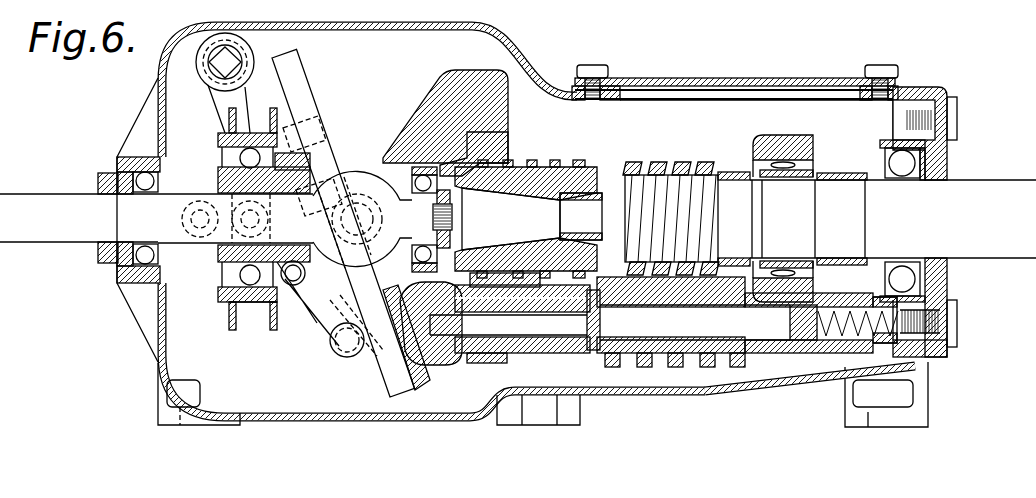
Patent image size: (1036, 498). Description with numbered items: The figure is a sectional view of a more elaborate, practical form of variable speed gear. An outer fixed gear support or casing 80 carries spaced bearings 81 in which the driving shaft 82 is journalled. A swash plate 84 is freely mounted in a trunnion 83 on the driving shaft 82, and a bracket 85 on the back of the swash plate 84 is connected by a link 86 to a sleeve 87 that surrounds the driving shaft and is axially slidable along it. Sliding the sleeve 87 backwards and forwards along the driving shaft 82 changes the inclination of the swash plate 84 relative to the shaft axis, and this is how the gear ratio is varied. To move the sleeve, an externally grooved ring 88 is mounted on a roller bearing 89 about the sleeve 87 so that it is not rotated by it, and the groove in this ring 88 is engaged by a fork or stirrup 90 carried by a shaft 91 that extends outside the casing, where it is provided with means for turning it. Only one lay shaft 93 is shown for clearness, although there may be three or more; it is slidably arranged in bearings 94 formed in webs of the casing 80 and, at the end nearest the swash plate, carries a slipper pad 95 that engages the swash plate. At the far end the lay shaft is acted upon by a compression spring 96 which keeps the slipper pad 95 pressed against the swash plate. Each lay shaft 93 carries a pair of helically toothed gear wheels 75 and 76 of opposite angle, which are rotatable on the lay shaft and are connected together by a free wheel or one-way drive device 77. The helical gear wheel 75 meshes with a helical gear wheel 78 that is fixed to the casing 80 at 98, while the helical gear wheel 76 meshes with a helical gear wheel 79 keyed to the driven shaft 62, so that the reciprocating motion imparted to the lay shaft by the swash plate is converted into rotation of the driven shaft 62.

The driven shaft 62 is at (606, 190).
The helical gear wheel 75 is at (570, 365).
The helical gear wheel 76 is at (745, 375).
The free wheel or one-way drive device 77 is at (648, 356).
The helical gear wheel 78 is at (556, 166).
The helical gear wheel 79 is at (655, 176).
The casing 80 is at (508, 52).
The bearings 81 is at (116, 266).
The driving shaft 82 is at (78, 198).
The trunnion 83 is at (360, 196).
The swash plate 84 is at (298, 62).
The bracket 85 is at (366, 360).
The link 86 is at (322, 320).
The sleeve 87 is at (222, 256).
The externally grooved ring 88 is at (228, 314).
The roller bearing 89 is at (252, 304).
The fork or stirrup 90 is at (233, 98).
The shaft 91 is at (243, 54).
The lay shaft 93 is at (708, 322).
The bearings 94 is at (488, 354).
The slipper pad 95 is at (435, 364).
The compression spring 96 is at (840, 347).
The fixing point of gear wheel 78 to casing 98 is at (461, 160).